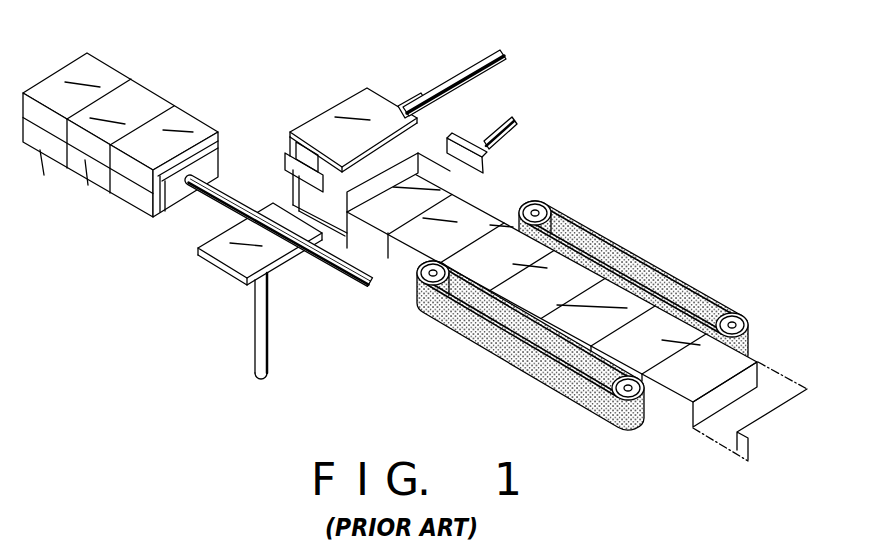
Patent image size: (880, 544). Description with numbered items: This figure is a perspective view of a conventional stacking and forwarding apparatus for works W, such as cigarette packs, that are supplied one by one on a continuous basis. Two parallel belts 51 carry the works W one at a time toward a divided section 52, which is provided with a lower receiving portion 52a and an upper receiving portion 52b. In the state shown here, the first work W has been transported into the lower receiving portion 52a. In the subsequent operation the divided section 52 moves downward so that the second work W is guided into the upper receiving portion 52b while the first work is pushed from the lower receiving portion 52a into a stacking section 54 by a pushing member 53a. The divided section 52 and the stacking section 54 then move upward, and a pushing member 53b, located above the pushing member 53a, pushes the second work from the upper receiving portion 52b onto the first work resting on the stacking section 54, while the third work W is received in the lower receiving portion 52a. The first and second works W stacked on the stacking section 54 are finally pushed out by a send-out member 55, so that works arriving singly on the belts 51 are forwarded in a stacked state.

The work W is at (197, 120).
The parallel belts 51 is at (690, 280).
The divided section 52 is at (355, 102).
The lower receiving portion 52a is at (347, 265).
The upper receiving portion 52b is at (420, 127).
The pushing member 53a is at (492, 161).
The pushing member 53b is at (468, 62).
The stacking section 54 is at (225, 255).
The send-out member 55 is at (173, 193).